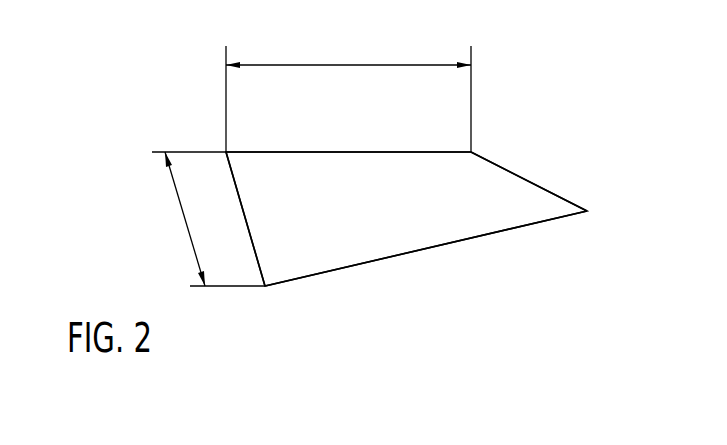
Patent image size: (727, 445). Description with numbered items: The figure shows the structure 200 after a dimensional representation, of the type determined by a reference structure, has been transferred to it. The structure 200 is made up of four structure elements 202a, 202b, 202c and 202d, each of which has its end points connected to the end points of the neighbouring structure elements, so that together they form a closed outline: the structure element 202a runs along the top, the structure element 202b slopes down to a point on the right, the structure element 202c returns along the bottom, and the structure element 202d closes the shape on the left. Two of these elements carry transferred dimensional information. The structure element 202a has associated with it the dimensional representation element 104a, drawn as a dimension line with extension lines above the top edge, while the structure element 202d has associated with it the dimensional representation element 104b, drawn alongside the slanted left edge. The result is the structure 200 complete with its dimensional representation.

The structure 200 is at (518, 246).
The structure element 202a is at (343, 152).
The structure element 202b is at (525, 181).
The structure element 202c is at (453, 243).
The structure element 202d is at (244, 213).
The dimensional representation element 104a is at (343, 65).
The dimensional representation element 104b is at (182, 213).